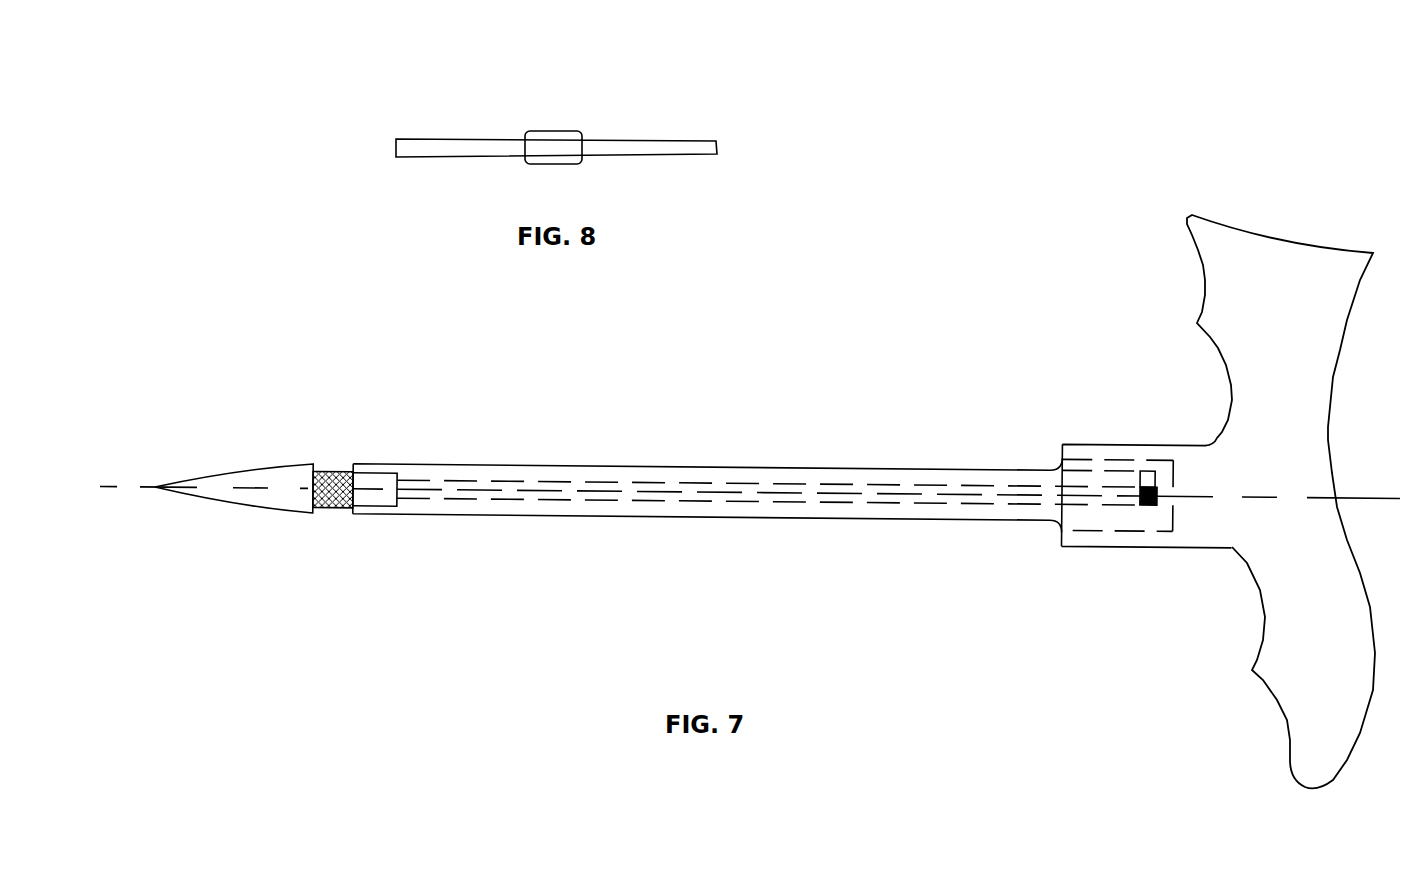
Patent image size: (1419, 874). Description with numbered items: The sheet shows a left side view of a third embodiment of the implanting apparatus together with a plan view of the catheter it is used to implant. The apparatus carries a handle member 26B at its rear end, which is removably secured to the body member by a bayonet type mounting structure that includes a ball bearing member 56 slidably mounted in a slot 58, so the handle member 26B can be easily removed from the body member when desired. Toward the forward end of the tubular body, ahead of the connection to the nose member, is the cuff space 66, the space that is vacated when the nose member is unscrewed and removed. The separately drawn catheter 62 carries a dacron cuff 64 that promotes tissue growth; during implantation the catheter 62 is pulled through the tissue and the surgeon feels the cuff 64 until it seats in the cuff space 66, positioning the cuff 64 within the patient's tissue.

In FIG. 7, the handle member 26B is at (1285, 232).
In FIG. 7, the ball bearing member 56 is at (1146, 490).
In FIG. 7, the slot 58 is at (1085, 463).
In FIG. 8, the catheter 62 is at (555, 90).
In FIG. 8, the dacron cuff 64 is at (591, 94).
In FIG. 7, the cuff space 66 is at (388, 468).